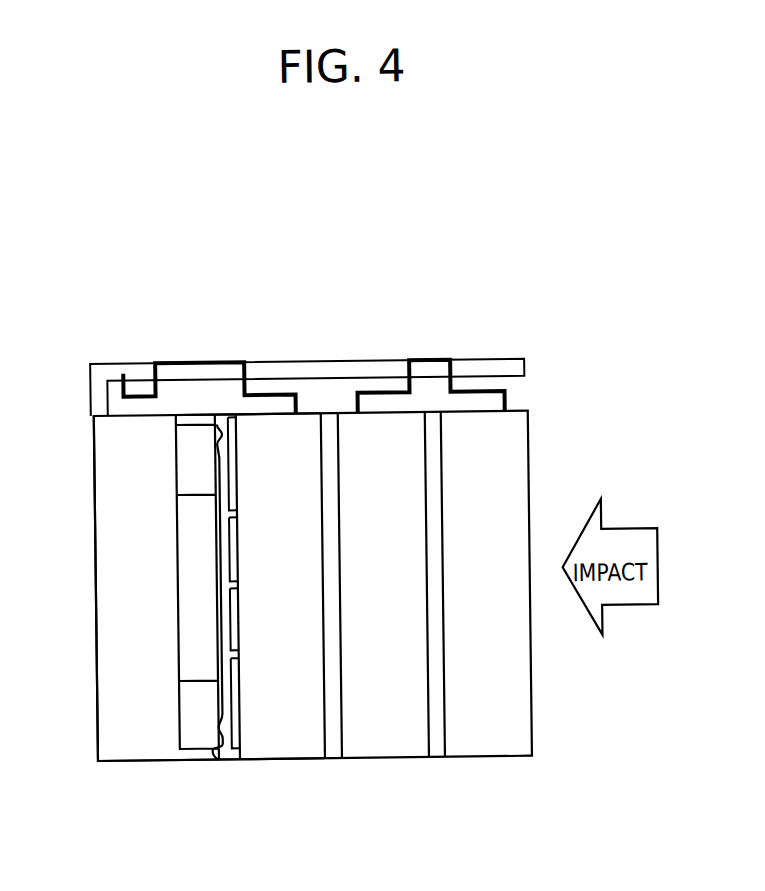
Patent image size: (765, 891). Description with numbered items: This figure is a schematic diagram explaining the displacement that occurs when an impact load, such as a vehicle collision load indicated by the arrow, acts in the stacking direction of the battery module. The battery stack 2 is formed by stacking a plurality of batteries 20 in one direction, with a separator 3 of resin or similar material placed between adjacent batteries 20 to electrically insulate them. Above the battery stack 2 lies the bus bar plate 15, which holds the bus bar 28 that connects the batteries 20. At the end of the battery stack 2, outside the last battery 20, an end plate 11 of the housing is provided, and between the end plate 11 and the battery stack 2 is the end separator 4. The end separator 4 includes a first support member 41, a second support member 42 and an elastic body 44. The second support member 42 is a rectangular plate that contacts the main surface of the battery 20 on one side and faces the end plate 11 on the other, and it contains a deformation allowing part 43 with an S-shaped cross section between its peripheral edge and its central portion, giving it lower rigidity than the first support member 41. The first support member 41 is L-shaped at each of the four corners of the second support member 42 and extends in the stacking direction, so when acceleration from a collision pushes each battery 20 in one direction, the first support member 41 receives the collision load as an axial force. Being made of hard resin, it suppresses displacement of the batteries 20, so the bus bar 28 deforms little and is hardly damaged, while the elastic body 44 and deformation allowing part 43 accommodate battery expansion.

The battery stack 2 is at (538, 413).
The separator 3 is at (335, 740).
The end separator 4 is at (166, 641).
The end plate 11 is at (133, 763).
The bus bar plate 15 is at (327, 362).
The battery 20 is at (290, 742).
The bus bar 28 is at (218, 362).
The first support member 41 is at (250, 640).
The second support member 42 is at (227, 552).
The deformation allowing part 43 is at (218, 740).
The elastic body 44 is at (190, 592).